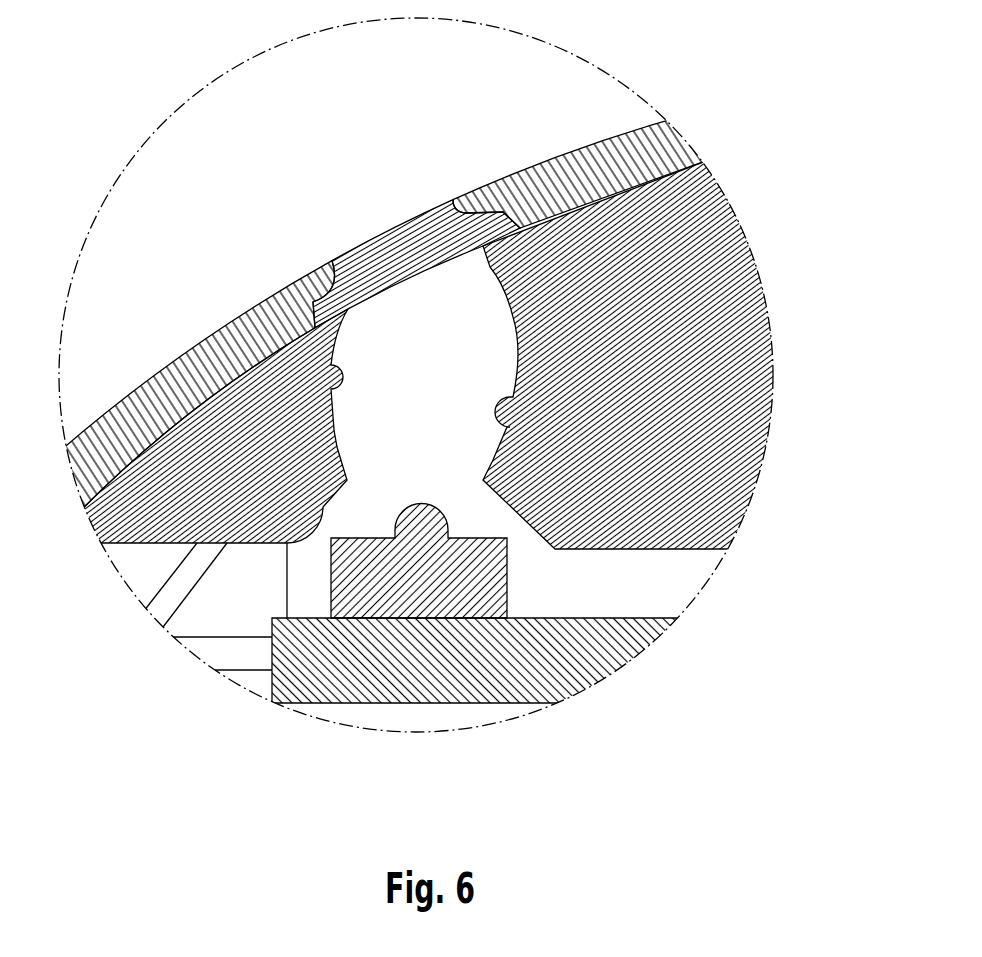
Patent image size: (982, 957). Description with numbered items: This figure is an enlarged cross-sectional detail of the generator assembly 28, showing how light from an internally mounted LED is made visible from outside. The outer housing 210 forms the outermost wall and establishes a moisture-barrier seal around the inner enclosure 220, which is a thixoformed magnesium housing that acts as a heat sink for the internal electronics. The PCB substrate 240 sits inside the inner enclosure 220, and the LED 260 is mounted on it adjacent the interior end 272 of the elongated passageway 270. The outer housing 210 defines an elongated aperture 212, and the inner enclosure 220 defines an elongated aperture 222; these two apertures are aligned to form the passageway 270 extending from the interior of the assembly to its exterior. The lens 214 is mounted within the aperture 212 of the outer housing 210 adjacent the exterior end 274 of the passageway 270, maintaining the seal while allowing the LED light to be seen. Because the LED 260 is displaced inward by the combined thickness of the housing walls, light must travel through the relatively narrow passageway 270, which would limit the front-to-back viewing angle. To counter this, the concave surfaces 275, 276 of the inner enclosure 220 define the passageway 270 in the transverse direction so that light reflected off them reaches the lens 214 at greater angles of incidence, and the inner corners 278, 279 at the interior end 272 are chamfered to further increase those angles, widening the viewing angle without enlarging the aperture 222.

The generator assembly 28 is at (414, 103).
The outer housing 210 is at (665, 152).
The elongated aperture 212 is at (525, 170).
The lens 214 is at (393, 250).
The inner enclosure 220 is at (743, 373).
The elongated aperture 222 is at (470, 318).
The PCB substrate 240 is at (583, 650).
The LED 260 is at (443, 568).
The elongated passageway 270 is at (430, 365).
The interior end 272 is at (410, 472).
The exterior end 274 is at (437, 275).
The concave surface 275 is at (305, 333).
The concave surface 276 is at (510, 427).
The inner corner 278 is at (295, 542).
The inner corner 279 is at (520, 515).